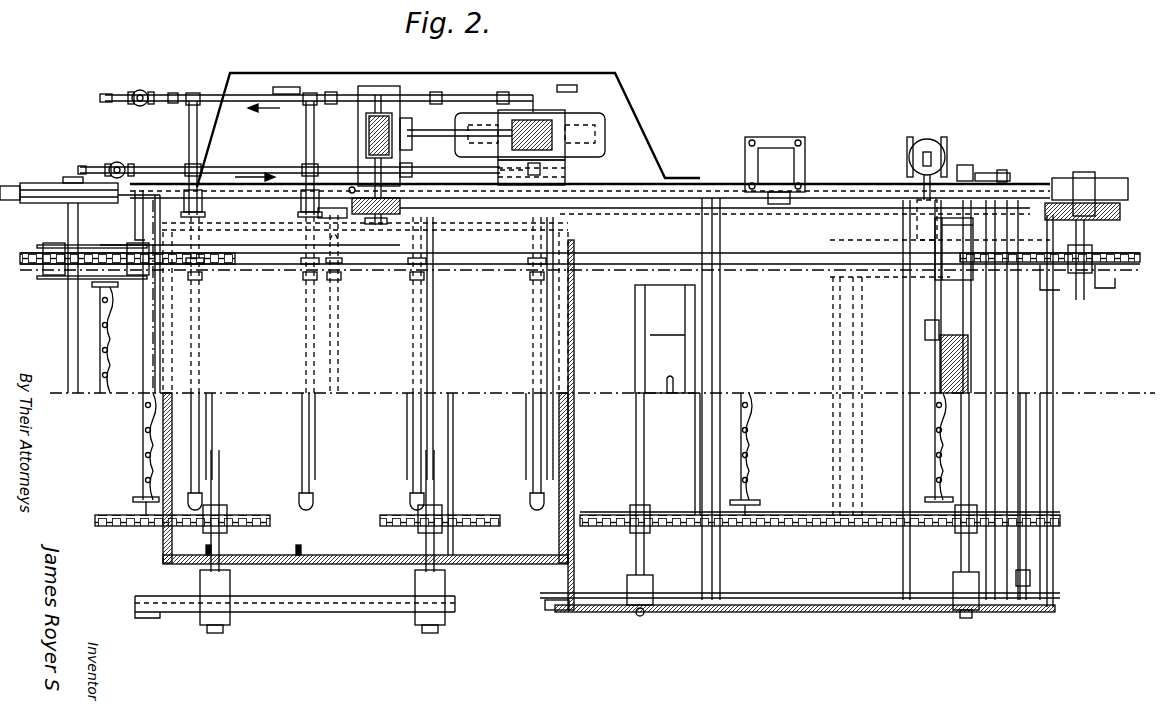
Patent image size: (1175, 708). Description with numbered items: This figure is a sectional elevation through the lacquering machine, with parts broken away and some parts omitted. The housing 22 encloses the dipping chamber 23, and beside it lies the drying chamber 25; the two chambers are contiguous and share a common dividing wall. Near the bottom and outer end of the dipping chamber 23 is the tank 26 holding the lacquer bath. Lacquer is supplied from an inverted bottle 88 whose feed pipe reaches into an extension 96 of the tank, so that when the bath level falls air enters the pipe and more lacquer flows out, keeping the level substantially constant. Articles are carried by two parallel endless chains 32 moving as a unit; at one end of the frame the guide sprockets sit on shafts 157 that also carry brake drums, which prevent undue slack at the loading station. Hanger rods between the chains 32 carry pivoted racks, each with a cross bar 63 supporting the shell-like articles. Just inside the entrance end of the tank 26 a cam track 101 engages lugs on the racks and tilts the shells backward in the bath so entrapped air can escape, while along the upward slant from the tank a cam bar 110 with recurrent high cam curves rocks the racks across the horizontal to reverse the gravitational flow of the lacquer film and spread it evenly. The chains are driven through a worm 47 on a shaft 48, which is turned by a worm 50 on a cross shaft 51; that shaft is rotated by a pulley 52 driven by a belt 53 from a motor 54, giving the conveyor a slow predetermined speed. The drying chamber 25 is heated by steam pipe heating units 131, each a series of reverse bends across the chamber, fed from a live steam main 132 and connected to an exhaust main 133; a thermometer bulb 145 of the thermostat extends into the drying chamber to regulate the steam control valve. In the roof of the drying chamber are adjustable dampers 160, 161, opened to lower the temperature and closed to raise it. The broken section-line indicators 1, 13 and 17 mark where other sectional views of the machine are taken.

The section line 1- 1 is at (558, 539).
The section line 13 is at (927, 137).
The section line 17 is at (1082, 178).
The housing 22 is at (743, 610).
The dipping chamber 23 is at (815, 565).
The drying chamber 25 is at (358, 540).
The tank 26 is at (1028, 483).
The endless chains 32 is at (1128, 257).
The worm 47 is at (557, 122).
The shaft 48 is at (435, 130).
The worm 50 is at (358, 123).
The cross shaft 51 is at (377, 182).
The pulley 52 is at (393, 216).
The belt 53 is at (662, 207).
The motor 54 is at (770, 163).
The cross bar 63 is at (751, 425).
The inverted bottle 88 is at (942, 157).
The extension of the tank 96 is at (917, 218).
The cam track 101 is at (968, 508).
The cam bar 110 is at (792, 514).
The steam pipe heating units 131 is at (315, 437).
The steam main 132 is at (160, 158).
The exhaust main 133 is at (153, 96).
The thermometer bulb 145 is at (334, 283).
The shafts 157 is at (1082, 232).
The adjustable damper 160 is at (662, 355).
The adjustable damper 161 is at (947, 302).